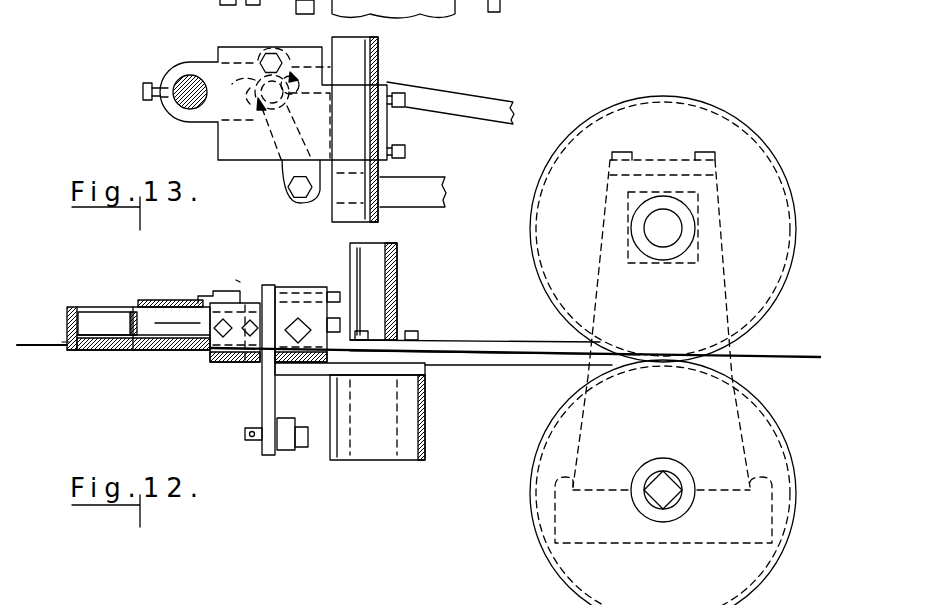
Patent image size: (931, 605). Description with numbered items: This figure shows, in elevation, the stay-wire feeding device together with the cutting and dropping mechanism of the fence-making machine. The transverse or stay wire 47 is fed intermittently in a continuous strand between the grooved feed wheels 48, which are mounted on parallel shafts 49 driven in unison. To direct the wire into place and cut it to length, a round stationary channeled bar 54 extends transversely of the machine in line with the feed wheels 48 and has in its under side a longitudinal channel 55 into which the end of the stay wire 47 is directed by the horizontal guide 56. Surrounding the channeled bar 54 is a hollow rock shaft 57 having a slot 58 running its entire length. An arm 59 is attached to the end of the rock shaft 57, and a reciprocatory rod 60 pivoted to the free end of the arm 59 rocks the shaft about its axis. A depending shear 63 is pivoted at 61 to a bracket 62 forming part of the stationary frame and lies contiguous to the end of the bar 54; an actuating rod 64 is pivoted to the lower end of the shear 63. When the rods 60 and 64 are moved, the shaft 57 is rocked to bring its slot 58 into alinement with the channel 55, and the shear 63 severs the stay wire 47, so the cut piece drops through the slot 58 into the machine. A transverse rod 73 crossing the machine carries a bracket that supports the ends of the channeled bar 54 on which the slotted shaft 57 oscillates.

In FIG. 12, the stay wire 47 is at (43, 350).
In FIG. 12, the grooved feed wheel 48 is at (663, 350).
In FIG. 12, the shaft 49 is at (668, 237).
In FIG. 13, the channeled bar 54 is at (253, 88).
In FIG. 12, the channeled bar 54 is at (72, 313).
In FIG. 12, the longitudinal channel 55 is at (67, 337).
In FIG. 12, the horizontal guide 56 is at (467, 342).
In FIG. 13, the hollow rock shaft 57 is at (262, 108).
In FIG. 12, the hollow rock shaft 57 is at (83, 313).
In FIG. 13, the slot 58 is at (250, 100).
In FIG. 12, the slot 58 is at (107, 340).
In FIG. 13, the arm 59 is at (295, 68).
In FIG. 12, the arm 59 is at (217, 297).
In FIG. 13, the reciprocatory rod 60 is at (450, 95).
In FIG. 12, the reciprocatory rod 60 is at (238, 280).
In FIG. 13, the pivot 61 is at (271, 56).
In FIG. 12, the pivot 61 is at (262, 284).
In FIG. 13, the bracket 62 is at (282, 129).
In FIG. 12, the bracket 62 is at (300, 285).
In FIG. 13, the shear 63 is at (283, 173).
In FIG. 13, the actuating rod 64 is at (425, 187).
In FIG. 12, the actuating rod 64 is at (285, 418).
In FIG. 13, the transverse rod 73 is at (182, 78).
In FIG. 12, the transverse rod 73 is at (183, 335).